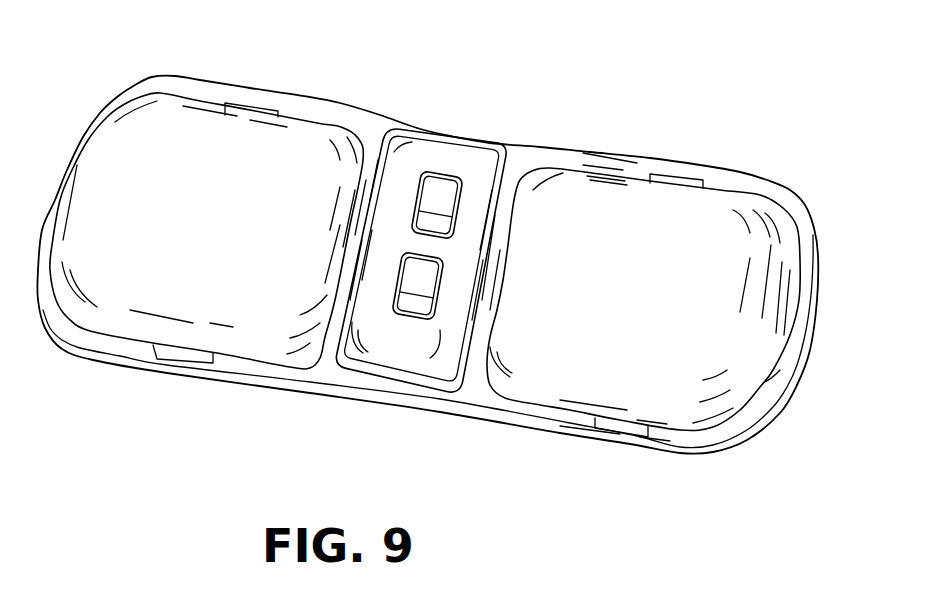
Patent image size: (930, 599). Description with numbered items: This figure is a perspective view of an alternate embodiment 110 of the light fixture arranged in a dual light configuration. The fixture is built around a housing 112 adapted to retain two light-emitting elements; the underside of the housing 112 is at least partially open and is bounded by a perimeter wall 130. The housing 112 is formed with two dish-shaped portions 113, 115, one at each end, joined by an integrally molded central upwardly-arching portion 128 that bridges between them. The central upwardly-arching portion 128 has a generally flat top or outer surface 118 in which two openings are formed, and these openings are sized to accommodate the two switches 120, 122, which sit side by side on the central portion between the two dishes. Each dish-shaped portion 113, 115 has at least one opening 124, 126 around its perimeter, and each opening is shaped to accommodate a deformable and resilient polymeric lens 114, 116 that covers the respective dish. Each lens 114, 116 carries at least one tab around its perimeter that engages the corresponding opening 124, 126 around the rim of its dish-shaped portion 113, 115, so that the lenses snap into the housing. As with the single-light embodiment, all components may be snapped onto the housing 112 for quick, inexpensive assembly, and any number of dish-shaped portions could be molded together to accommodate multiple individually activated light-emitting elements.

The alternate embodiment of the light fixture 110 is at (427, 259).
The housing 112 is at (773, 190).
The dish-shaped portion 113 is at (164, 47).
The lens 114 is at (317, 133).
The dish-shaped portion 115 is at (534, 106).
The lens 116 is at (580, 187).
The outer surface 118 is at (480, 163).
The switch 120 is at (437, 190).
The switch 122 is at (413, 303).
The opening 124 is at (248, 106).
The opening 126 is at (677, 180).
The central upwardly-arching portion 128 is at (430, 372).
The perimeter wall 130 is at (786, 393).